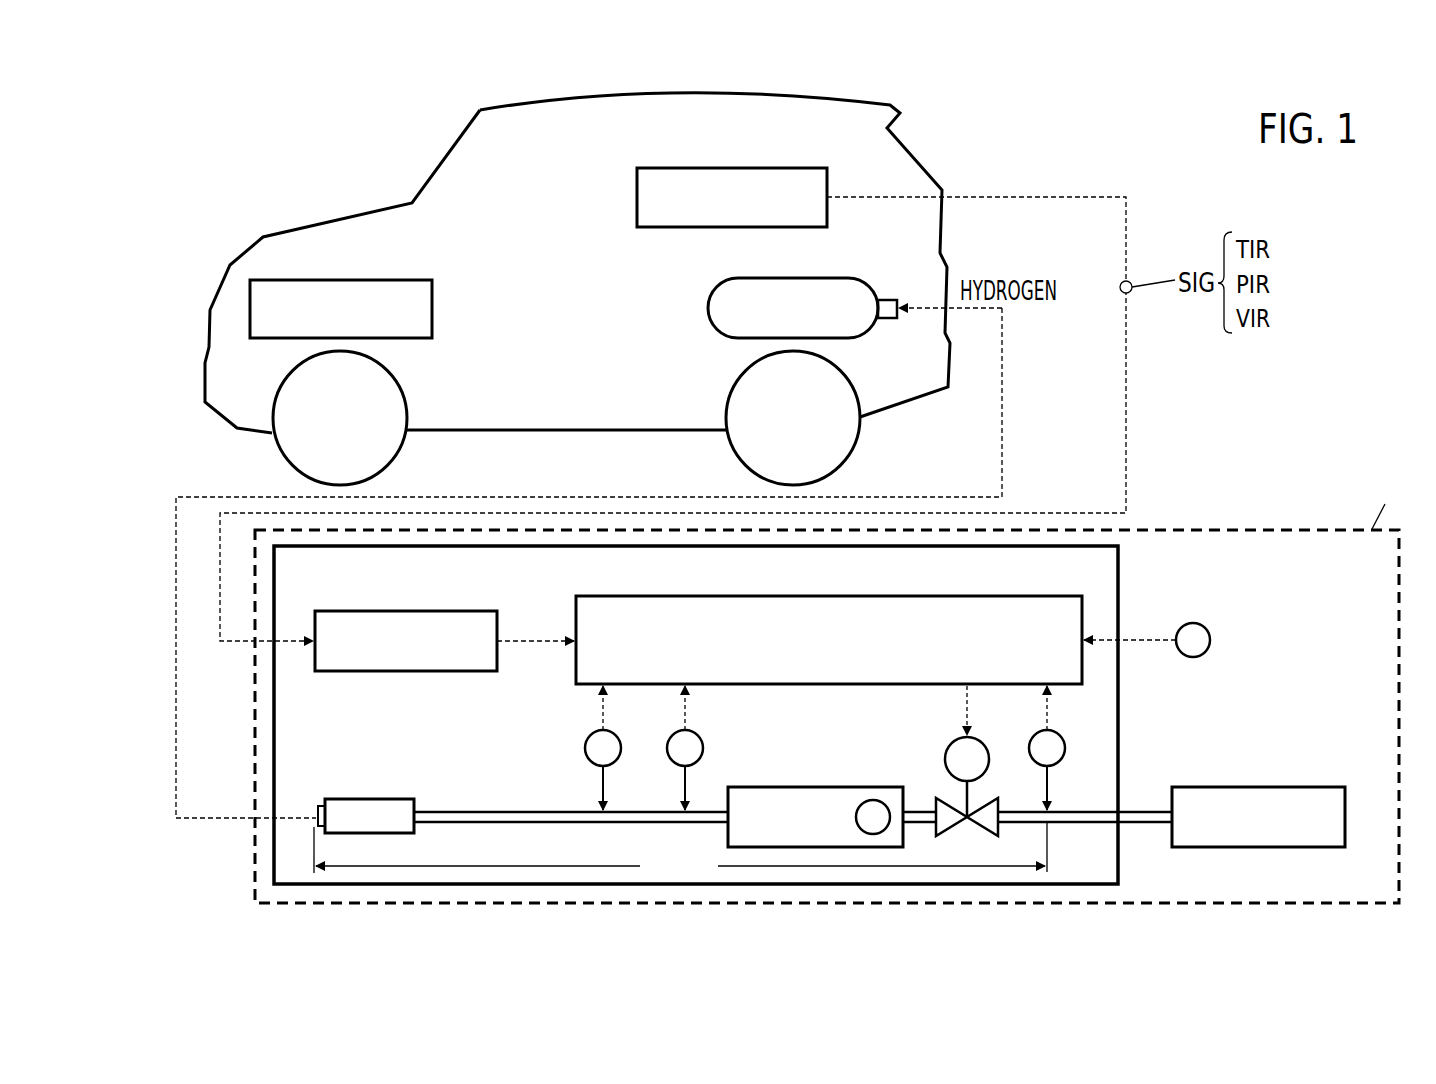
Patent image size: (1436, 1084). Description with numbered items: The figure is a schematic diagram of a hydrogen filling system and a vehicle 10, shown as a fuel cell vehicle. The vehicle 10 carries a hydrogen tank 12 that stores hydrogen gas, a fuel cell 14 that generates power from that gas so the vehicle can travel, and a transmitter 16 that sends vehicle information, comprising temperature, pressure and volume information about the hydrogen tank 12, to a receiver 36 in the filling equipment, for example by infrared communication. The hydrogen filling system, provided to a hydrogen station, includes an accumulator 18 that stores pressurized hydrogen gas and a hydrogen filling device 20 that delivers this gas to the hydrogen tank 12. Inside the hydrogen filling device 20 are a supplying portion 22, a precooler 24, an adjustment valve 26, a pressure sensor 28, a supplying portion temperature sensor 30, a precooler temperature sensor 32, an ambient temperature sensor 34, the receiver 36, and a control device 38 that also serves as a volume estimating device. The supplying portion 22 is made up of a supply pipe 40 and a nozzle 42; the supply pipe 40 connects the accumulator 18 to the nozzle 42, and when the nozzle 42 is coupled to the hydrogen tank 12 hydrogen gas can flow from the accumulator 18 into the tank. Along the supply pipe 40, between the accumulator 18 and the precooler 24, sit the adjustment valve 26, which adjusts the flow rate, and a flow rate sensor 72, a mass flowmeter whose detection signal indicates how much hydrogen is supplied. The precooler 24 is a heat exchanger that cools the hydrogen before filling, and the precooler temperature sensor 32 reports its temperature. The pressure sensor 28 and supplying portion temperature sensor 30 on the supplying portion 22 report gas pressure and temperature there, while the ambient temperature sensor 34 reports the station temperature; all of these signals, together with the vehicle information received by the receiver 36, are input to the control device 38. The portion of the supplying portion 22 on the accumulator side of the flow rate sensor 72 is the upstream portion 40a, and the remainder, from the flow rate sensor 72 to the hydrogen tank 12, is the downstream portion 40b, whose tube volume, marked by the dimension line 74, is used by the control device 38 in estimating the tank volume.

The vehicle 10 is at (467, 127).
The hydrogen tank 12 is at (708, 303).
The fuel cell 14 is at (413, 280).
The transmitter 16 is at (758, 168).
The accumulator 18 is at (1316, 787).
The hydrogen filling device 20 is at (1120, 568).
The supplying portion 22 is at (238, 834).
The precooler 24 is at (796, 787).
The adjustment valve 26 is at (951, 742).
The pressure sensor 28 is at (585, 740).
The supplying portion temperature sensor 30 is at (703, 740).
The precooler temperature sensor 32 is at (880, 800).
The ambient temperature sensor 34 is at (1212, 633).
The receiver 36 is at (360, 611).
The control device (volume estimating device) 38 is at (617, 596).
The supply pipe 40 is at (793, 785).
The upstream portion 40a is at (1098, 812).
The downstream portion 40b is at (528, 812).
The nozzle 42 is at (392, 799).
The flow rate sensor 72 is at (1067, 734).
The tube section 74 is at (1085, 823).